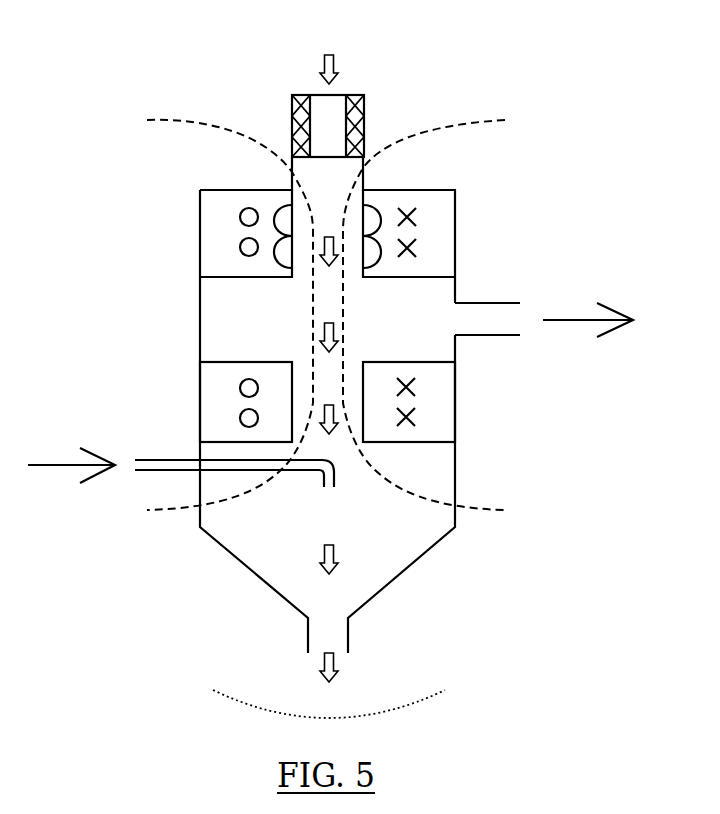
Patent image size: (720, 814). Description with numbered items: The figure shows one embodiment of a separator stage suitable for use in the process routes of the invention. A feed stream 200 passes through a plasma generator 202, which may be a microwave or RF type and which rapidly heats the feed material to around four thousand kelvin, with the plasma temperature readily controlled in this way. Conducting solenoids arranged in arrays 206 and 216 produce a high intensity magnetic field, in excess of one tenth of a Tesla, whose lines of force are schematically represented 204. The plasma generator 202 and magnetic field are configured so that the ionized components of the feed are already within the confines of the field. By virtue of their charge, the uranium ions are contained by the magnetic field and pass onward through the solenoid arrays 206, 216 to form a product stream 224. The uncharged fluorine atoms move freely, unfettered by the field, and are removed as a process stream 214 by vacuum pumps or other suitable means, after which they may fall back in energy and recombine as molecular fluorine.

The feed stream 200 is at (328, 55).
The plasma generator 202 is at (365, 107).
The lines of force 204 is at (410, 133).
The array of conducting solenoids 206 is at (435, 248).
The process stream 214 is at (570, 320).
The array of conducting solenoids 216 is at (445, 419).
The product stream 224 is at (329, 685).